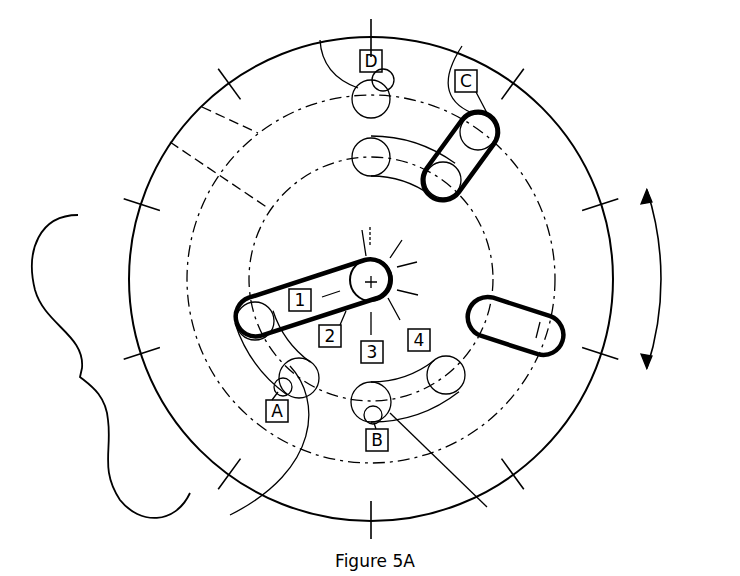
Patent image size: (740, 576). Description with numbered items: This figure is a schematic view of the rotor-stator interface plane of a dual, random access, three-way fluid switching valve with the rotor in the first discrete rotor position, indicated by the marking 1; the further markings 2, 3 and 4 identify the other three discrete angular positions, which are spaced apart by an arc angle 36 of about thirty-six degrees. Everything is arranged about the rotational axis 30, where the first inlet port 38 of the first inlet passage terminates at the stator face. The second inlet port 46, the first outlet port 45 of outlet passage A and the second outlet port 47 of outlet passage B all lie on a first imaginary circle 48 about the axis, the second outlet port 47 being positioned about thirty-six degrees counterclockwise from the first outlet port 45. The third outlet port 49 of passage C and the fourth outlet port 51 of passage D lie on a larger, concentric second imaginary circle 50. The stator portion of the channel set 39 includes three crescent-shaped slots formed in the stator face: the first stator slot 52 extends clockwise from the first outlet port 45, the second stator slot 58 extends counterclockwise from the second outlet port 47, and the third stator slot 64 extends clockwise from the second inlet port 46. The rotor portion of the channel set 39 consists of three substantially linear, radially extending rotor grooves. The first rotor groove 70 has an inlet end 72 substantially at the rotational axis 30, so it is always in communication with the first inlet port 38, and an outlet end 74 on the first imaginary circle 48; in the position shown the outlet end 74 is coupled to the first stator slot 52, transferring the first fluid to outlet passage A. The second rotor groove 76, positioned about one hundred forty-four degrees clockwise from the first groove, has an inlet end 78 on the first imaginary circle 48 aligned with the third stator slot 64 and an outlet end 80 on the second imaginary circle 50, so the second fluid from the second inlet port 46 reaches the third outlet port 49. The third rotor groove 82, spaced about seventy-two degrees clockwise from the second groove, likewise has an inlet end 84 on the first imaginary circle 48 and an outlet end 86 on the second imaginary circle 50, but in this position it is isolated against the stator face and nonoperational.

The first discrete rotor position marking 1 is at (520, 73).
The second discrete rotor position marking 2 is at (371, 29).
The third discrete rotor position marking 3 is at (225, 74).
The fourth discrete rotor position marking 4 is at (133, 196).
The rotational axis 30 is at (400, 296).
The arc angle 36 is at (640, 278).
The first inlet port 38 is at (358, 262).
The channel set 39 is at (78, 378).
The first outlet port 45 is at (256, 448).
The second inlet port 46 is at (362, 178).
The second outlet port 47 is at (453, 469).
The first imaginary circle 48 is at (170, 142).
The third outlet port 49 is at (464, 70).
The second imaginary circle 50 is at (202, 107).
The fourth outlet port 51 is at (350, 67).
The first stator slot 52 is at (272, 362).
The second stator slot 58 is at (418, 410).
The third stator slot 64 is at (412, 157).
The first rotor groove 70 is at (318, 273).
The inlet end 72 is at (403, 257).
The outlet end 74 is at (235, 325).
The second rotor groove 76 is at (486, 160).
The inlet end 78 is at (430, 192).
The outlet end 80 is at (495, 118).
The third rotor groove 82 is at (508, 300).
The inlet end 84 is at (468, 325).
The outlet end 86 is at (553, 338).